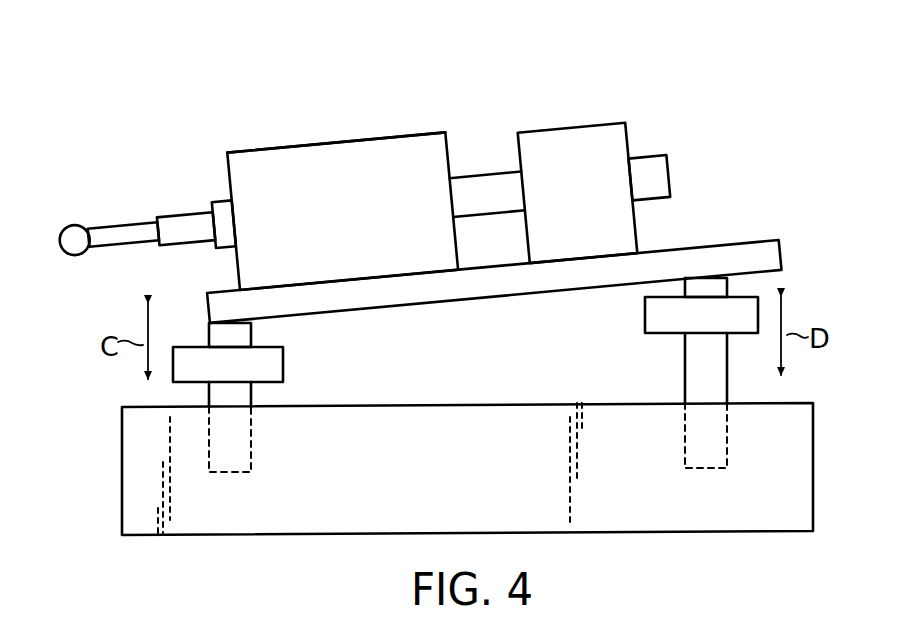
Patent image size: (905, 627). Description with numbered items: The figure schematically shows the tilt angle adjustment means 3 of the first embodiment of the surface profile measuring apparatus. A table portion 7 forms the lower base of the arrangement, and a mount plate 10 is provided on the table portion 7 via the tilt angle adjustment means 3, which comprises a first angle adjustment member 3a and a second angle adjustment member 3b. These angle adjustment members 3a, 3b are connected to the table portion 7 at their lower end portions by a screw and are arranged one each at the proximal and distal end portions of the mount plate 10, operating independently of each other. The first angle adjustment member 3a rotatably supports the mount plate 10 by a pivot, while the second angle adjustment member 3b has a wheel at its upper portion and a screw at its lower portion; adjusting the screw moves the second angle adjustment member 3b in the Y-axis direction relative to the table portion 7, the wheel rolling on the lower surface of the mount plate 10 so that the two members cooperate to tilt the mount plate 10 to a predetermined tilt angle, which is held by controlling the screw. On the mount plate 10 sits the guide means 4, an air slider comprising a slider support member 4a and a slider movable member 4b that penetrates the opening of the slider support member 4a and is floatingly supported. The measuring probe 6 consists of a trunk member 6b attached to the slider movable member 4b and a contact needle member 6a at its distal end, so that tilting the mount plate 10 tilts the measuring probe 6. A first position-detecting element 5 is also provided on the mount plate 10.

The tilt angle adjustment means 3 is at (465, 375).
The first angle adjustment member 3a is at (277, 360).
The second angle adjustment member 3b is at (650, 316).
The guide means 4 is at (322, 155).
The slider support member 4a is at (290, 154).
The slider movable member 4b is at (215, 207).
The first position-detecting element 5 is at (580, 140).
The measuring probe 6 is at (132, 259).
The contact needle member 6a is at (68, 236).
The trunk member 6b is at (170, 226).
The table portion 7 is at (807, 500).
The mount plate 10 is at (735, 258).